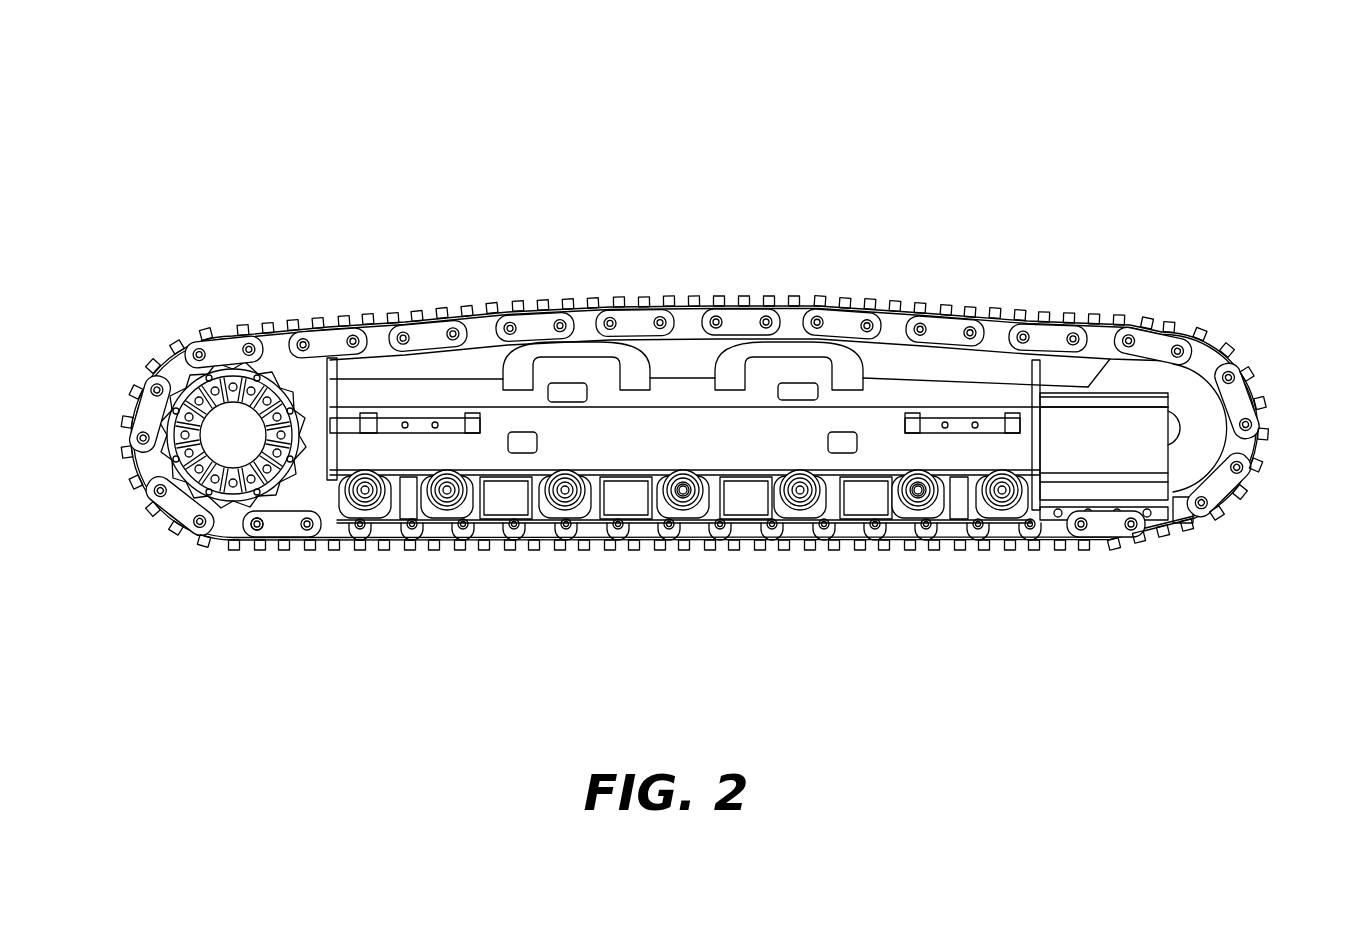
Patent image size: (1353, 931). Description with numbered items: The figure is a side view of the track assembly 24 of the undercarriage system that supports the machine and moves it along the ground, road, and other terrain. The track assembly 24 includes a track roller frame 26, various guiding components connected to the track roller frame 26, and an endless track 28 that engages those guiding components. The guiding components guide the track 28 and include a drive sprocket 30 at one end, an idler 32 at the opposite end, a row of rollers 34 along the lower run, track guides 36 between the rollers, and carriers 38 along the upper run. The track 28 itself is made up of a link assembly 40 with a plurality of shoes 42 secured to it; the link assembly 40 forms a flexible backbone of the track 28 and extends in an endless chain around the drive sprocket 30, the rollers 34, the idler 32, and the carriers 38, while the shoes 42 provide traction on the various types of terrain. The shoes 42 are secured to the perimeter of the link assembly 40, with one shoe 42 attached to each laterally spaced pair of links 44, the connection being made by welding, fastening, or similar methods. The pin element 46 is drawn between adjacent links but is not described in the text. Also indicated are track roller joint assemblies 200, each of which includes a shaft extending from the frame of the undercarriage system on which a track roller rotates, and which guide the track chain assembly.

The track assembly 24 is at (1112, 108).
The track roller frame 26 is at (593, 430).
The endless track 28 is at (1100, 375).
The drive sprocket 30 is at (233, 435).
The idler 32 is at (1197, 448).
The rollers 34 is at (368, 512).
The track guides 36 is at (506, 505).
The carriers 38 is at (518, 365).
The link assembly 40 is at (373, 330).
The shoes 42 is at (705, 300).
The links 44 is at (222, 322).
The link pin 46 is at (255, 530).
The track roller joint assembly 200 is at (700, 508).